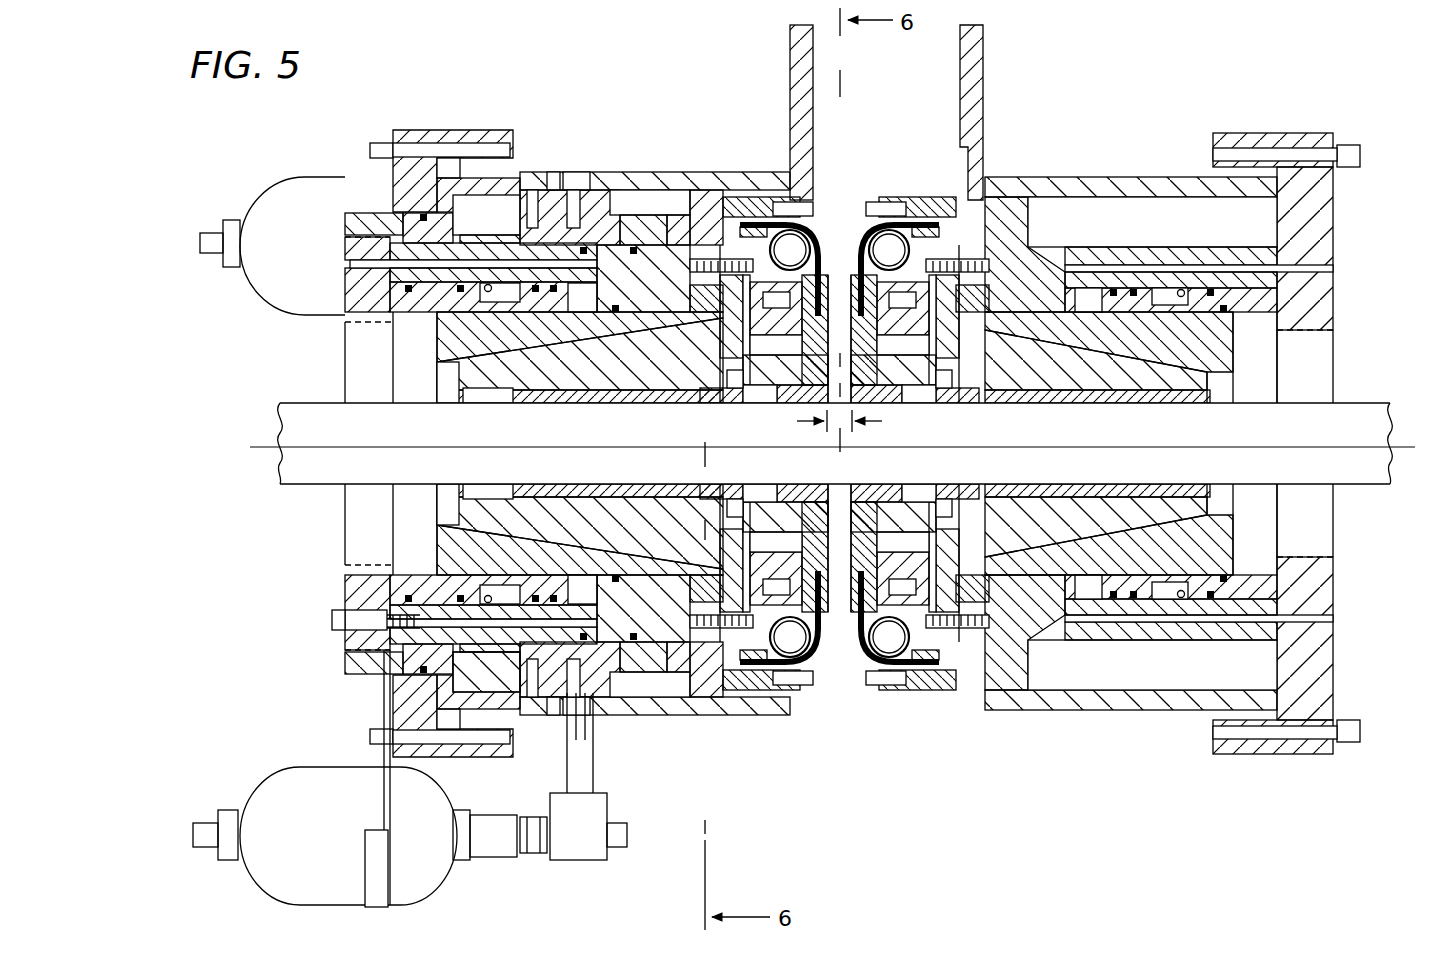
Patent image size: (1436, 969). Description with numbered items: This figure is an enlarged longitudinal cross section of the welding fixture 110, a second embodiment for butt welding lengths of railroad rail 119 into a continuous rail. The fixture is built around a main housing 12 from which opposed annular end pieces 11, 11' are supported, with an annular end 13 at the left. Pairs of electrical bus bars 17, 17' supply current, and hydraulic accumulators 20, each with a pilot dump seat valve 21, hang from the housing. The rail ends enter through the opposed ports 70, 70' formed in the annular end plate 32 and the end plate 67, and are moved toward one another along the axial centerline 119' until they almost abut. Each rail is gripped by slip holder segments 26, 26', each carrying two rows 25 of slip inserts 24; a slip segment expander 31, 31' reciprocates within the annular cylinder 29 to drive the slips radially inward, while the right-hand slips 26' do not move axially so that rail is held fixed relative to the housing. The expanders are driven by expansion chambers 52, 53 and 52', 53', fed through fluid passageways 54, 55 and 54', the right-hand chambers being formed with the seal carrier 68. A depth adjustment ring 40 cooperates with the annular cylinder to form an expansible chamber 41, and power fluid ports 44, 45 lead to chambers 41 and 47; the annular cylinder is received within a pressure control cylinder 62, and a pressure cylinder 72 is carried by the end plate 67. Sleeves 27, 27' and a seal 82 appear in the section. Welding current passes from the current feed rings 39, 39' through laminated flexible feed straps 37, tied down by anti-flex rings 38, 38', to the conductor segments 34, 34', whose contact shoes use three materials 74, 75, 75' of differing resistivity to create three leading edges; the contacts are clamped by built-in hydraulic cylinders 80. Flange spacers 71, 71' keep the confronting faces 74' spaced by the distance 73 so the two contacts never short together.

The annular end piece 11 is at (1335, 100).
The annular end piece 11' is at (353, 111).
The main housing 12 is at (690, 170).
The annular end 13 is at (342, 214).
The electrical bus bar 17 is at (1014, 48).
The electrical bus bar 17' is at (742, 48).
The hydraulic accumulator 20 is at (370, 778).
The pilot dump seat valve 21 is at (607, 805).
The slip insert 24 is at (640, 408).
The row of slip inserts 25 is at (556, 402).
The slip holder segment 26 is at (643, 355).
The slip segment 26' is at (1046, 441).
The sleeve 27 is at (535, 469).
The sleeve 27' is at (1091, 469).
The annular cylinder 29 is at (672, 294).
The slip segment expander 31 is at (419, 367).
The slip expander 31' is at (1249, 538).
The annular end plate 32 is at (345, 320).
The conductor segment 34 is at (728, 467).
The conductor segment 34' is at (947, 467).
The laminated flexible electrical current feed strap 37 is at (820, 270).
The anti-flex ring 38 is at (829, 216).
The anti-flex ring 38' is at (899, 206).
The current feed ring 39 is at (747, 154).
The current feed ring 39' is at (1050, 209).
The depth adjustment ring 40 is at (425, 216).
The expansible chamber 41 is at (522, 173).
The power fluid port 44 is at (552, 178).
The power fluid port 45 is at (585, 183).
The expansion chamber 47 is at (642, 200).
The expansion chamber 52 is at (587, 351).
The expansible chamber 52' is at (1088, 252).
The expansion chamber 53 is at (535, 358).
The expansible chamber 53' is at (1146, 249).
The fluid passageway 54 is at (316, 279).
The fluid passageway 54' is at (1364, 251).
The fluid passageway 55 is at (488, 285).
The pressure control cylinder 62 is at (456, 212).
The end plate 67 is at (1330, 230).
The seal carrier 68 is at (410, 312).
The port 70 is at (327, 356).
The port 70' is at (1352, 360).
The flange spacer 71 is at (476, 772).
The flange spacer 71' is at (1265, 99).
The pressure cylinder 72 is at (1030, 250).
The spaced distance 73 is at (848, 426).
The contact shoe material 74 is at (777, 468).
The confronting face 74' is at (869, 662).
The contact shoe material 75 is at (809, 468).
The contact shoe material 75' is at (848, 468).
The hydraulic cylinder 80 is at (926, 552).
The seal 82 is at (756, 600).
The welding fixture 110 is at (1122, 110).
The rail 119 is at (824, 467).
The axial centerline 119' is at (812, 431).